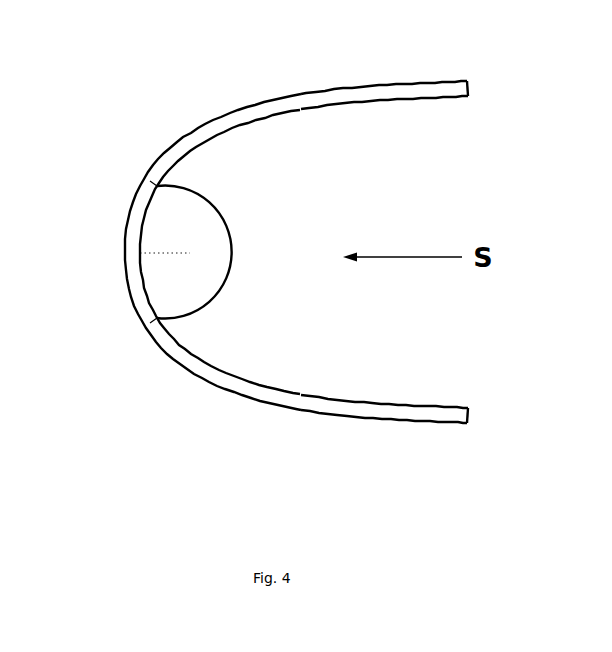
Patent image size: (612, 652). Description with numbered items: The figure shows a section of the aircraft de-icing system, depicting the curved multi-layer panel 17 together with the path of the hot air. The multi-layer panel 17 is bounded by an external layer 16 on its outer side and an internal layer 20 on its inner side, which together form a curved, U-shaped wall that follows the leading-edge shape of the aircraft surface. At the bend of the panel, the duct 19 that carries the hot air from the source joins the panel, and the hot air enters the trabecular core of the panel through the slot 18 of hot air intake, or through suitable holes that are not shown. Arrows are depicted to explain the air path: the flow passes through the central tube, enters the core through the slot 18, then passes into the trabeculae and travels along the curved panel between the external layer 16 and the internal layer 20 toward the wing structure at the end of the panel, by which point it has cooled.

The external layer 16 is at (453, 80).
The multi-layer panel 17 is at (244, 113).
The slot of hot air intake 18 is at (138, 253).
The duct 19 is at (197, 314).
The internal layer 20 is at (428, 420).